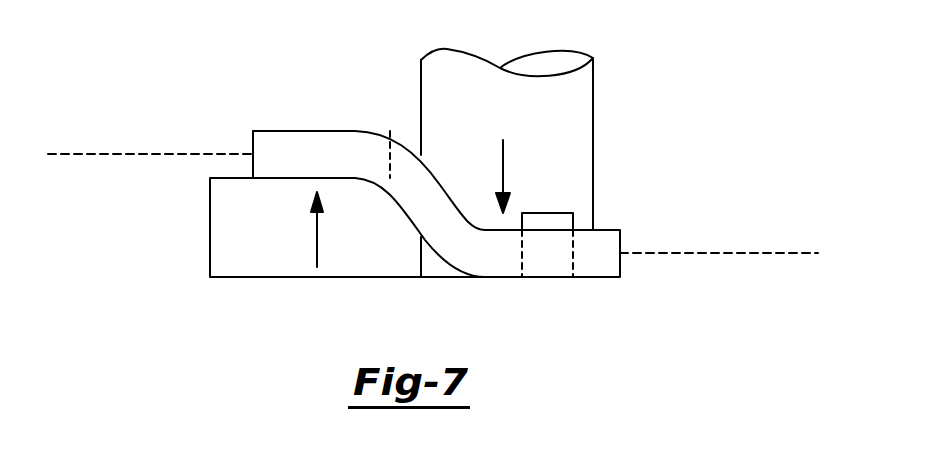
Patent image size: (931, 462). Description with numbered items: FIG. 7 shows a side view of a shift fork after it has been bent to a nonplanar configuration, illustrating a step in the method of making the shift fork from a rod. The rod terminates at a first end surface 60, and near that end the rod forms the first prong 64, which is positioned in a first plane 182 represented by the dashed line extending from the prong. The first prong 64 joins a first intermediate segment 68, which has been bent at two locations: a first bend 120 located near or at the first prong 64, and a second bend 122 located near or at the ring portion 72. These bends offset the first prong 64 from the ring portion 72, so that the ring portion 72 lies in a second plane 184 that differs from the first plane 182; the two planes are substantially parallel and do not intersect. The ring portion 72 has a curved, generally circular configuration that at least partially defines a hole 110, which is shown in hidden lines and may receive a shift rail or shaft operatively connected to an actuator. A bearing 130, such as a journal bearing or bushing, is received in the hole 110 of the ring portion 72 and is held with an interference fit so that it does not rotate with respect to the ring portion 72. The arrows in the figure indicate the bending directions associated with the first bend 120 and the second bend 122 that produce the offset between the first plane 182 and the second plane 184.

The first end surface 60 is at (253, 143).
The first prong 64 is at (306, 131).
The first intermediate segment 68 is at (447, 230).
The ring portion 72 is at (622, 238).
The hole 110 is at (572, 253).
The first bend 120 is at (393, 197).
The second bend 122 is at (478, 222).
The bearing 130 is at (575, 222).
The first plane 182 is at (118, 150).
The second plane 184 is at (808, 253).